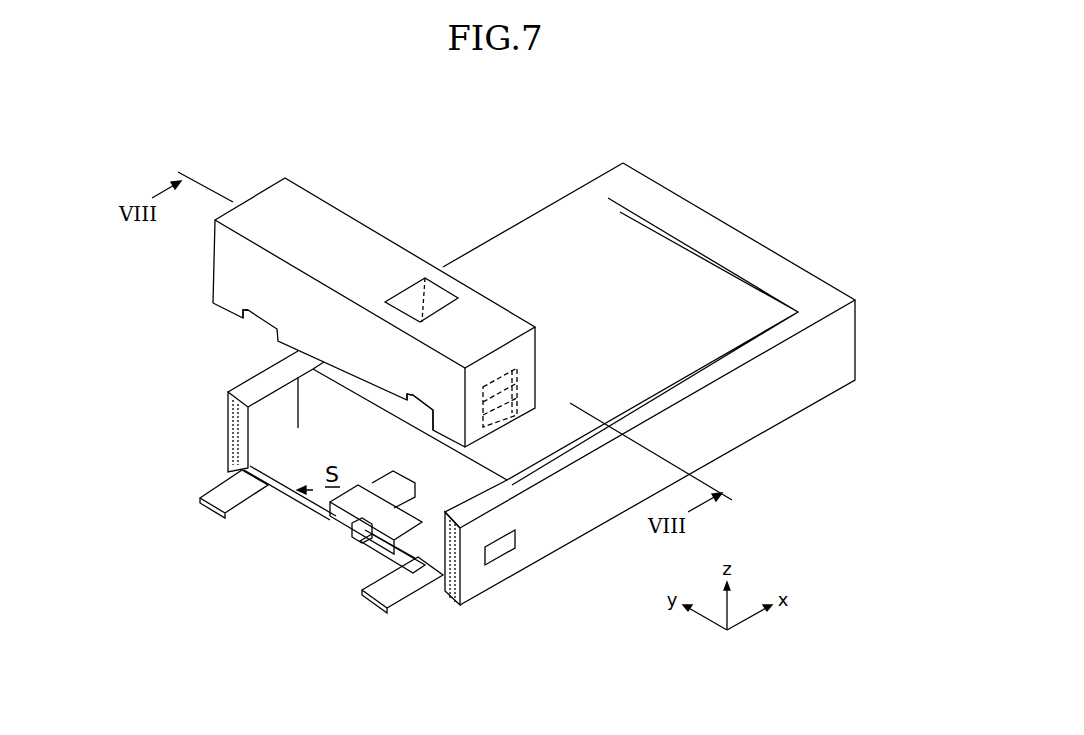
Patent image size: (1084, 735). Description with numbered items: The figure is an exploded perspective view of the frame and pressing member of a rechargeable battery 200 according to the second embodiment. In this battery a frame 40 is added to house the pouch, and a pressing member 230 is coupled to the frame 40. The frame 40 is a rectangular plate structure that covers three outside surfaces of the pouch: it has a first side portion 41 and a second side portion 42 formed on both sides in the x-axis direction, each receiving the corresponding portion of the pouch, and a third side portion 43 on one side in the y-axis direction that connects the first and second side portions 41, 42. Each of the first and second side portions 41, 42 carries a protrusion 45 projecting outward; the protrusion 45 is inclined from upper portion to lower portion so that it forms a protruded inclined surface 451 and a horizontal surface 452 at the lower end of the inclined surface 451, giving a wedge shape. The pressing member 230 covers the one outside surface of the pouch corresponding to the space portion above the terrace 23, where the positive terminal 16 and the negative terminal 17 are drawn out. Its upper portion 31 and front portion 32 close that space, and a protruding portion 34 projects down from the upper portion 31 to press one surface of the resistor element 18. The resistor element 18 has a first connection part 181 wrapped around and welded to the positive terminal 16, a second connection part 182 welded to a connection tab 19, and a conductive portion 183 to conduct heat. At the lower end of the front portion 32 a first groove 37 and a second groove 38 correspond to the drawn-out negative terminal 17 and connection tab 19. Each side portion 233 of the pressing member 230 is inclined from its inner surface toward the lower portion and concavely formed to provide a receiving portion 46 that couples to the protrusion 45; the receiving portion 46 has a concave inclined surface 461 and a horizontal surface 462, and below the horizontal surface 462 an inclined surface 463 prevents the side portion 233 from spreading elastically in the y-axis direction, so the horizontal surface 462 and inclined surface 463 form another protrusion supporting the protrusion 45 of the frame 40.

The rechargeable battery 200 is at (429, 121).
The pressing member 230 is at (403, 398).
The upper portion 31 is at (277, 202).
The front portion 32 is at (223, 272).
The protruding portion 34 is at (411, 300).
The first groove 37 is at (248, 318).
The second groove 38 is at (410, 428).
The frame 40 is at (541, 363).
The first side portion 41 is at (760, 410).
The second side portion 42 is at (527, 230).
The third side portion 43 is at (707, 230).
The protrusion 45 is at (524, 586).
The inclined surface 451 is at (512, 548).
The horizontal surface 452 is at (520, 487).
The receiving portion 46 is at (573, 365).
The inclined surface 461 is at (517, 372).
The horizontal surface 462 is at (487, 402).
The inclined surface 463 is at (553, 391).
The side portion 233 is at (541, 403).
The positive terminal 16 is at (370, 508).
The negative terminal 17 is at (222, 500).
The resistor element 18 is at (327, 585).
The first connection part 181 is at (347, 522).
The second connection part 182 is at (372, 573).
The conductive portion 183 is at (360, 540).
The connection tab 19 is at (395, 595).
The terrace 23 is at (296, 496).